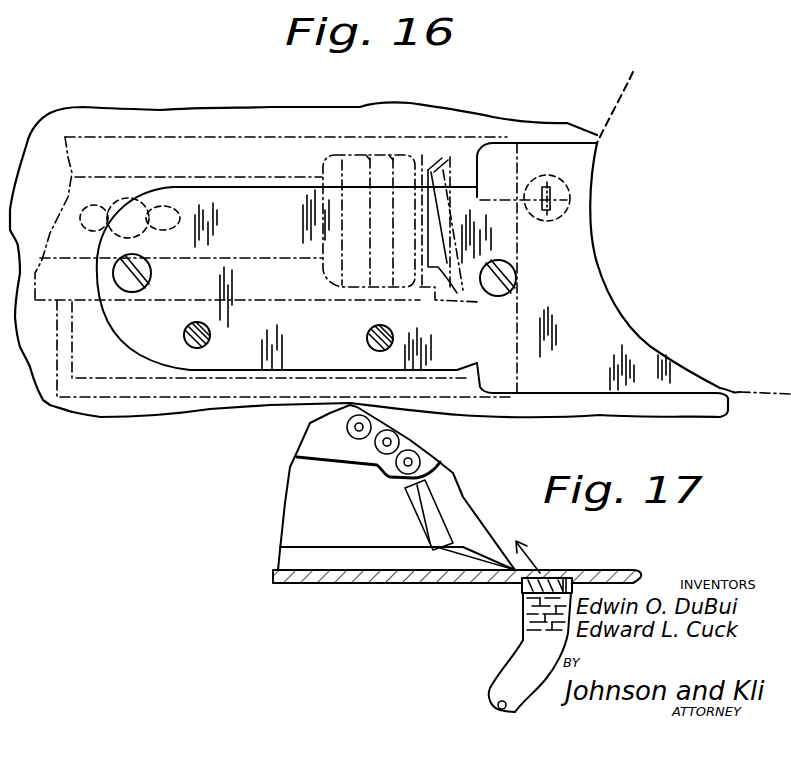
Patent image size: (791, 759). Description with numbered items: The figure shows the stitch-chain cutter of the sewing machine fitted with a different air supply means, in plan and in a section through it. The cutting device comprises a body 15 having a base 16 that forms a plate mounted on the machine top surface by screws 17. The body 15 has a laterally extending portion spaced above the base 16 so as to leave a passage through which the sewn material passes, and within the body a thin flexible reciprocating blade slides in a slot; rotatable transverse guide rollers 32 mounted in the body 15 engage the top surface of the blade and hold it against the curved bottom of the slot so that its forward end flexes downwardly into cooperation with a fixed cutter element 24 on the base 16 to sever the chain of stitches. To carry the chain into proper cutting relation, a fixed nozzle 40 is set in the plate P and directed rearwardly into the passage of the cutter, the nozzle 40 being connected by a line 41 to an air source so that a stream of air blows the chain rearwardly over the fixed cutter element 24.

In FIG. 16, the body 15 is at (127, 137).
In FIG. 17, the body 15 is at (274, 510).
In FIG. 16, the base 16 is at (108, 400).
In FIG. 17, the base 16 is at (317, 558).
In FIG. 16, the screws 17 is at (205, 346).
In FIG. 16, the fixed cutter element 24 is at (440, 280).
In FIG. 17, the fixed cutter element 24 is at (408, 535).
In FIG. 16, the guide rollers 32 is at (340, 172).
In FIG. 16, the nozzle 40 is at (553, 187).
In FIG. 17, the nozzle 40 is at (551, 578).
In FIG. 17, the line 41 is at (537, 650).
In FIG. 16, the plate P is at (567, 262).
In FIG. 17, the plate P is at (620, 570).